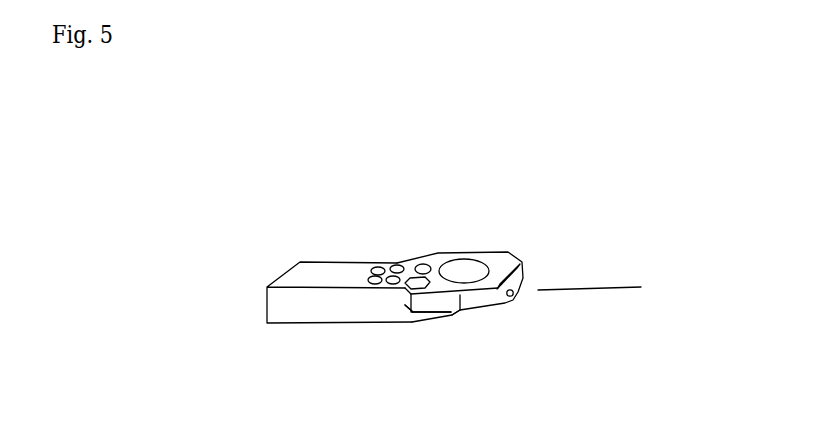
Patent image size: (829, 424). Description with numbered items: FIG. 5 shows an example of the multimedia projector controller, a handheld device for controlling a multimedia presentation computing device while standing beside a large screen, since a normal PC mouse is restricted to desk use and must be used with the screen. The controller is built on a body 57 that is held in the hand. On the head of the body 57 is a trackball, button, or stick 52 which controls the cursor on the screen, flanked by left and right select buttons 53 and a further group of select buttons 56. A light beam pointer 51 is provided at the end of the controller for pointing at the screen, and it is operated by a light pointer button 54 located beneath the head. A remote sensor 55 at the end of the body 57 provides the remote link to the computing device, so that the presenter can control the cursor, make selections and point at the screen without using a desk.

The light beam pointer 51 is at (513, 297).
The trackball, button, or stick 52 is at (465, 262).
The select buttons, left and right 53 is at (418, 263).
The light pointer button 54 is at (454, 315).
The remote sensor 55 is at (520, 267).
The select buttons 56 is at (372, 268).
The body 57 is at (317, 315).